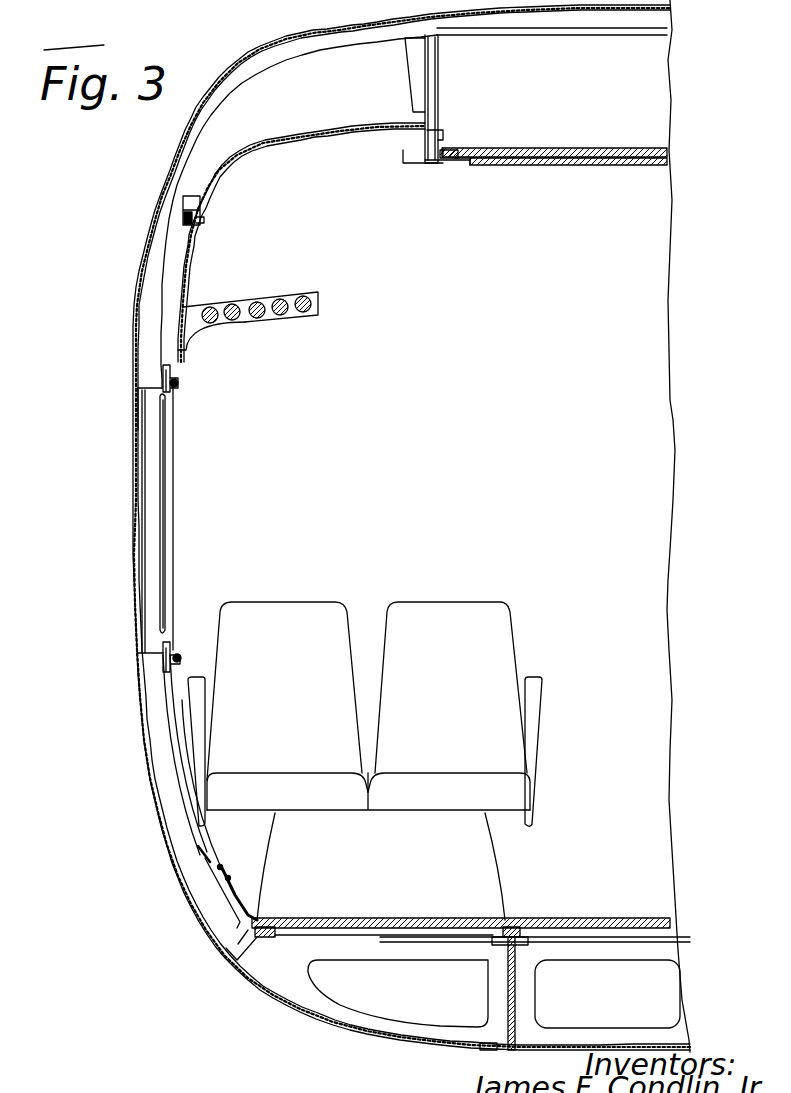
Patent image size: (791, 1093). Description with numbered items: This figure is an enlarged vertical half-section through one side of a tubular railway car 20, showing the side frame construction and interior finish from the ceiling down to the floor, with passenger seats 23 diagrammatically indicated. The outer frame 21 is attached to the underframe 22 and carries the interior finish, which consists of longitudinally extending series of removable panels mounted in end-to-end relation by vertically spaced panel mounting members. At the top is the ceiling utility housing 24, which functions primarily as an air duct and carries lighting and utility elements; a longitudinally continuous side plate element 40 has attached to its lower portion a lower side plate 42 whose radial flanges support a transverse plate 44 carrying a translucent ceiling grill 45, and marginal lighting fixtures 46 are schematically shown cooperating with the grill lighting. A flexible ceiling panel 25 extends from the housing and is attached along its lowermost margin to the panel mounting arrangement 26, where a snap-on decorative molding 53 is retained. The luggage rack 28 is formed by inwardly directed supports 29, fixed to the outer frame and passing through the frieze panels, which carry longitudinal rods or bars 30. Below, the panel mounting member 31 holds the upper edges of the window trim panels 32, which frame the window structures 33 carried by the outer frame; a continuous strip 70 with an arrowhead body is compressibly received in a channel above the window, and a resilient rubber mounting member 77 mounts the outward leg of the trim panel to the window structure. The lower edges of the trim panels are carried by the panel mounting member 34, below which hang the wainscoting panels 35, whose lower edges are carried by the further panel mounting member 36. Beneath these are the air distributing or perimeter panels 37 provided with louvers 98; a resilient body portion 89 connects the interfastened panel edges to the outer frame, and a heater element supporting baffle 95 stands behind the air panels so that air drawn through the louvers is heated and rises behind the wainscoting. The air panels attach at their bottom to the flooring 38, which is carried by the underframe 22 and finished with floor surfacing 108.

The tubular railway car 20 is at (307, 31).
The outer frame 21 is at (135, 300).
The underframe 22 is at (563, 946).
The passenger seats 23 is at (275, 613).
The ceiling utility housing 24 is at (641, 67).
The flexible ceiling panel 25 is at (297, 126).
The panel mounting arrangement 26 is at (210, 215).
The luggage rack 28 is at (264, 295).
The inwardly directed supports 29 is at (227, 300).
The rods or bars 30 is at (235, 322).
The panel mounting member 31 is at (190, 372).
The window trim panels 32 is at (176, 507).
The window structures 33 is at (163, 466).
The panel mounting member 34 is at (181, 647).
The wainscoting panels 35 is at (183, 750).
The panel mounting member 36 is at (223, 837).
The air distributing or perimeter panels 37 is at (250, 900).
The flooring 38 is at (408, 917).
The side plate element 40 is at (428, 77).
The lower side plate 42 is at (434, 134).
The transverse plate 44 is at (562, 147).
The translucent ceiling grill 45 is at (597, 165).
The marginal lighting fixtures 46 is at (447, 165).
The snap-on decorative molding 53 is at (205, 222).
The strip 70 is at (180, 383).
The resilient mounting member 77 is at (164, 542).
The resilient body portion 89 is at (199, 850).
The heater element supporting baffle 95 is at (233, 900).
The louvers 98 is at (230, 876).
The floor surfacing 108 is at (358, 917).